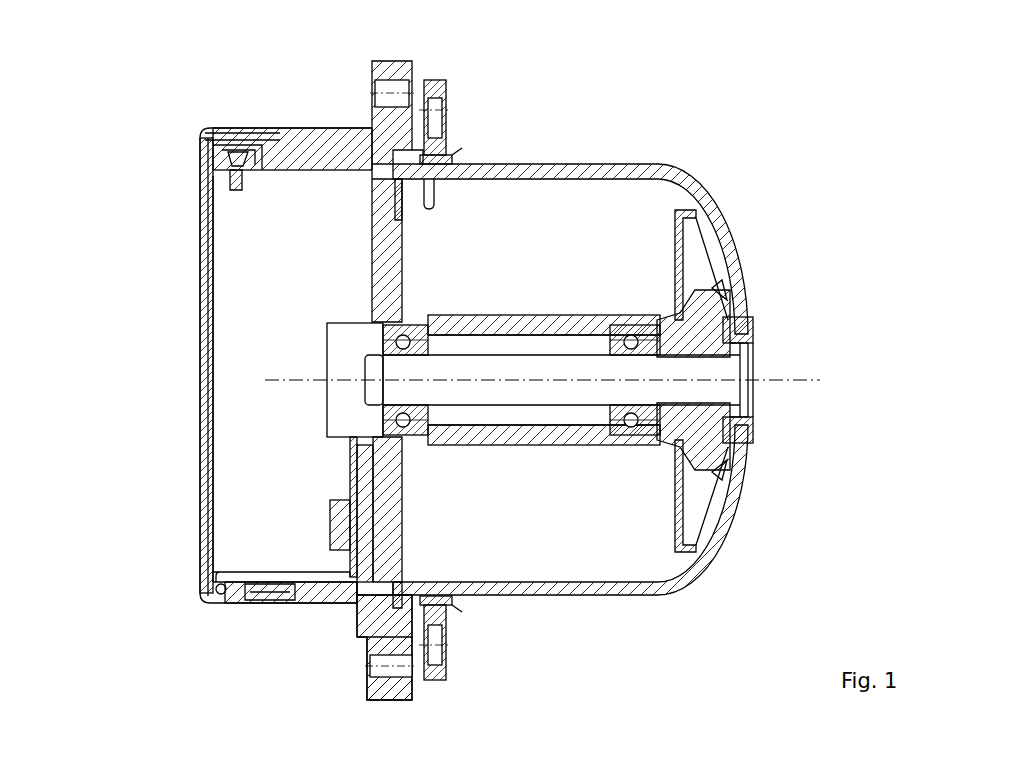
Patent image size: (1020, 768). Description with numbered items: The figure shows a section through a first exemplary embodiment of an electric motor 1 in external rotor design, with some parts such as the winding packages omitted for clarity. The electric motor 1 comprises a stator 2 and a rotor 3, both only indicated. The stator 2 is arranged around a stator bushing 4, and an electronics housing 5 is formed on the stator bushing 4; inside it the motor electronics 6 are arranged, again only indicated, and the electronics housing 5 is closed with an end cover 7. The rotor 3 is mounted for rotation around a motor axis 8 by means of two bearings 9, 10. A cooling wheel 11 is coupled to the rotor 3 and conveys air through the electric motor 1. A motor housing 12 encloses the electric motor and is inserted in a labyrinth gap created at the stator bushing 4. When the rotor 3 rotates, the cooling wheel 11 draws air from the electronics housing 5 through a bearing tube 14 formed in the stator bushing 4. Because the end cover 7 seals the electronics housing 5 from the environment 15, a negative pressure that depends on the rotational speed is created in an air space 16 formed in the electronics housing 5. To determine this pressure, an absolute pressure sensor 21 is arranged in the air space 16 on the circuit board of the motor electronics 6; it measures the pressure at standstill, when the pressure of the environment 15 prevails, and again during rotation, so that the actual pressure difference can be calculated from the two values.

The electric motor 1 is at (165, 120).
The stator 2 is at (516, 305).
The rotor 3 is at (743, 342).
The stator bushing 4 is at (388, 148).
The electronics housing 5 is at (282, 158).
The motor electronics 6 is at (352, 457).
The end cover 7 is at (202, 347).
The motor axis 8 is at (718, 390).
The bearing 9 is at (406, 330).
The bearing 10 is at (613, 335).
The cooling wheel 11 is at (706, 240).
The motor housing 12 is at (547, 168).
The bearing tube 14 is at (508, 427).
The environment 15 is at (46, 330).
The air space 16 is at (262, 250).
The absolute pressure sensor 21 is at (330, 533).